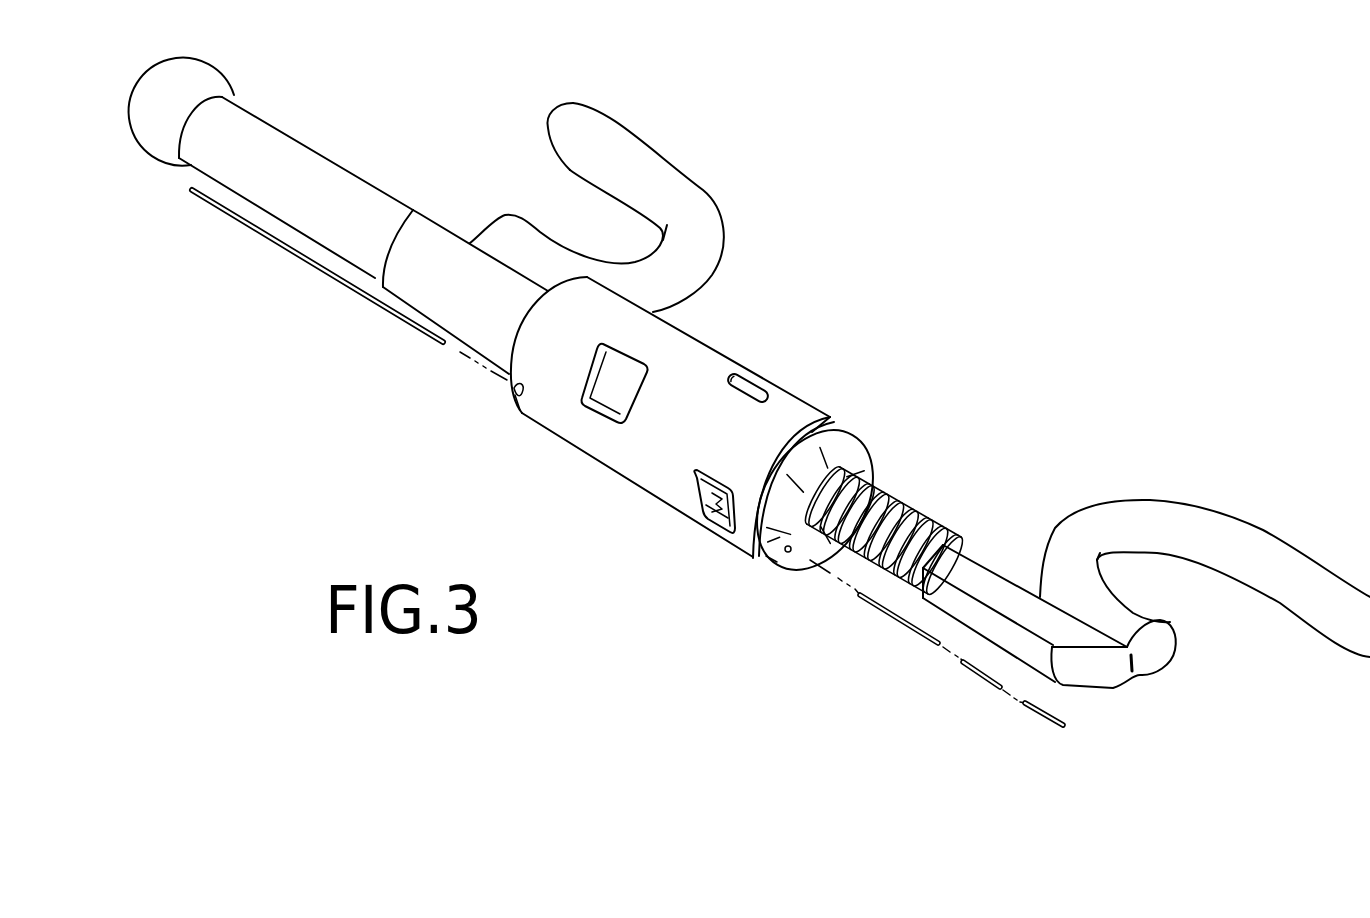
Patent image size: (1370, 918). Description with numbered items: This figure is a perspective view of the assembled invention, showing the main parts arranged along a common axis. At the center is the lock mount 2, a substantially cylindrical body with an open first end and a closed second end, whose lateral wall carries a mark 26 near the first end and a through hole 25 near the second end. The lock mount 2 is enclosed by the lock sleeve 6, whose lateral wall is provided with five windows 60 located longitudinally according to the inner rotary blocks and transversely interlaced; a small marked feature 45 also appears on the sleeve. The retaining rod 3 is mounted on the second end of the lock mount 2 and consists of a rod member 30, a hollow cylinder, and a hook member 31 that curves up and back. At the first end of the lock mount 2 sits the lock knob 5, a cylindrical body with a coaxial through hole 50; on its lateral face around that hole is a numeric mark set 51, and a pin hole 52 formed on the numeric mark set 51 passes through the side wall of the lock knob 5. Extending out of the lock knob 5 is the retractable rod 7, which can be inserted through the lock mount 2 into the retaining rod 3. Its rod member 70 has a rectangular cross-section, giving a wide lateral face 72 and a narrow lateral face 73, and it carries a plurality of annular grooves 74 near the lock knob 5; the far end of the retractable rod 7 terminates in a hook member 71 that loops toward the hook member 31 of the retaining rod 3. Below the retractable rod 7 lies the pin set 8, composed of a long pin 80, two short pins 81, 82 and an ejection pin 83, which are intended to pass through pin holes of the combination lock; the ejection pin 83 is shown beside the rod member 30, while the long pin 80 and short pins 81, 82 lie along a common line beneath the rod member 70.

The lock mount 2 is at (812, 432).
The retaining rod 3 is at (403, 180).
The lock knob 5 is at (843, 440).
The lock sleeve 6 is at (617, 460).
The retractable rod 7 is at (1010, 550).
The pin set 8 is at (927, 683).
The through hole 25 is at (517, 413).
The mark 26 is at (755, 545).
The rod member 30 is at (445, 247).
The hook member 31 is at (642, 168).
The latch window 45 is at (715, 530).
The through hole 50 is at (845, 480).
The numeric mark set 51 is at (772, 565).
The pin hole 52 is at (788, 552).
The windows 60 is at (693, 503).
The rod member 70 is at (1007, 585).
The hook member 71 is at (1167, 518).
The wide lateral face 72 is at (957, 547).
The narrow lateral face 73 is at (1008, 655).
The annular grooves 74 is at (910, 528).
The long pin 80 is at (903, 630).
The short pin 81 is at (977, 677).
The short pin 82 is at (1043, 720).
The ejection pin 83 is at (333, 275).